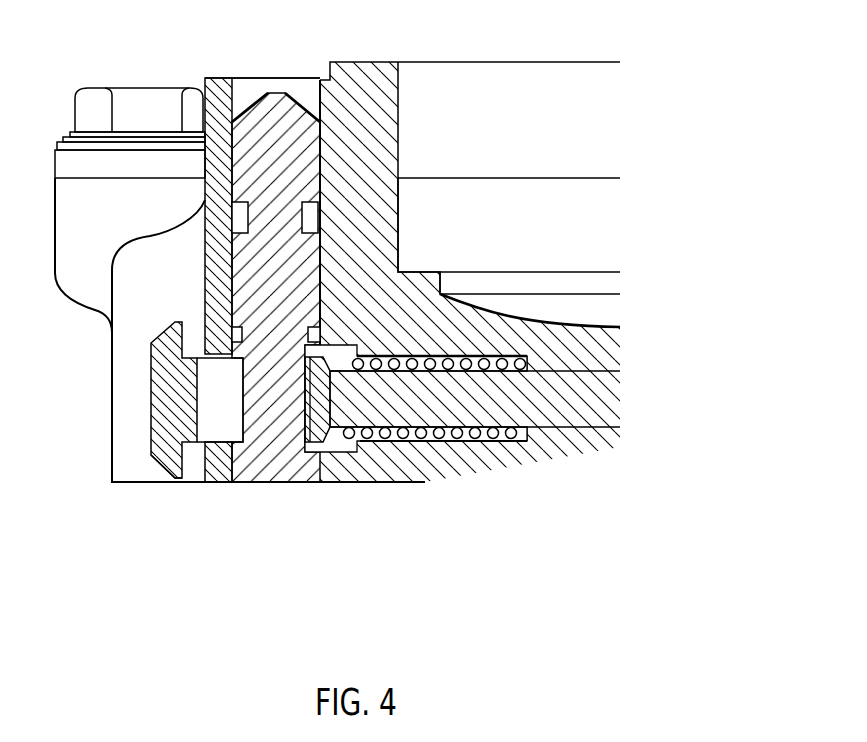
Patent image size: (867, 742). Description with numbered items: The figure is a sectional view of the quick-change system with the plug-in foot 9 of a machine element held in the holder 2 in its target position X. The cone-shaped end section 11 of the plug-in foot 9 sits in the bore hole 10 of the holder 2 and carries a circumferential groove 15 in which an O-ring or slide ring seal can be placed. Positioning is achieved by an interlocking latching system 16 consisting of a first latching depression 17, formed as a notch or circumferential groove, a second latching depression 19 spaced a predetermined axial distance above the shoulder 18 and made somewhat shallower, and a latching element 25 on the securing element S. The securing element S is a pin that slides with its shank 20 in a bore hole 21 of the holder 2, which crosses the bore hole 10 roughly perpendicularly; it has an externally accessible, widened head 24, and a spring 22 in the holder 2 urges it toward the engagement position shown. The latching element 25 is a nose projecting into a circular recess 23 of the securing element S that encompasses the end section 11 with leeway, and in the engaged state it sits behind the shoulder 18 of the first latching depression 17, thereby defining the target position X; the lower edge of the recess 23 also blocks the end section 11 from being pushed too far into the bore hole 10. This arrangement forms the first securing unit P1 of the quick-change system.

The holder 2 is at (398, 105).
The plug-in foot 9 is at (292, 473).
The bore hole 10 is at (315, 98).
The end section 11 is at (307, 262).
The circumferential groove 15 is at (313, 212).
The interlocking latching system 16 is at (225, 410).
The first latching depression 17 is at (207, 392).
The shoulder 18 is at (195, 372).
The second latching depression 19 is at (235, 332).
The shank 20 is at (563, 382).
The bore hole 21 is at (593, 364).
The spring 22 is at (472, 357).
The recess 23 is at (213, 375).
The head 24 is at (158, 465).
The latching element 25 is at (398, 265).
The first securing unit P1 is at (404, 328).
The securing element S is at (130, 387).
The target position x is at (137, 434).